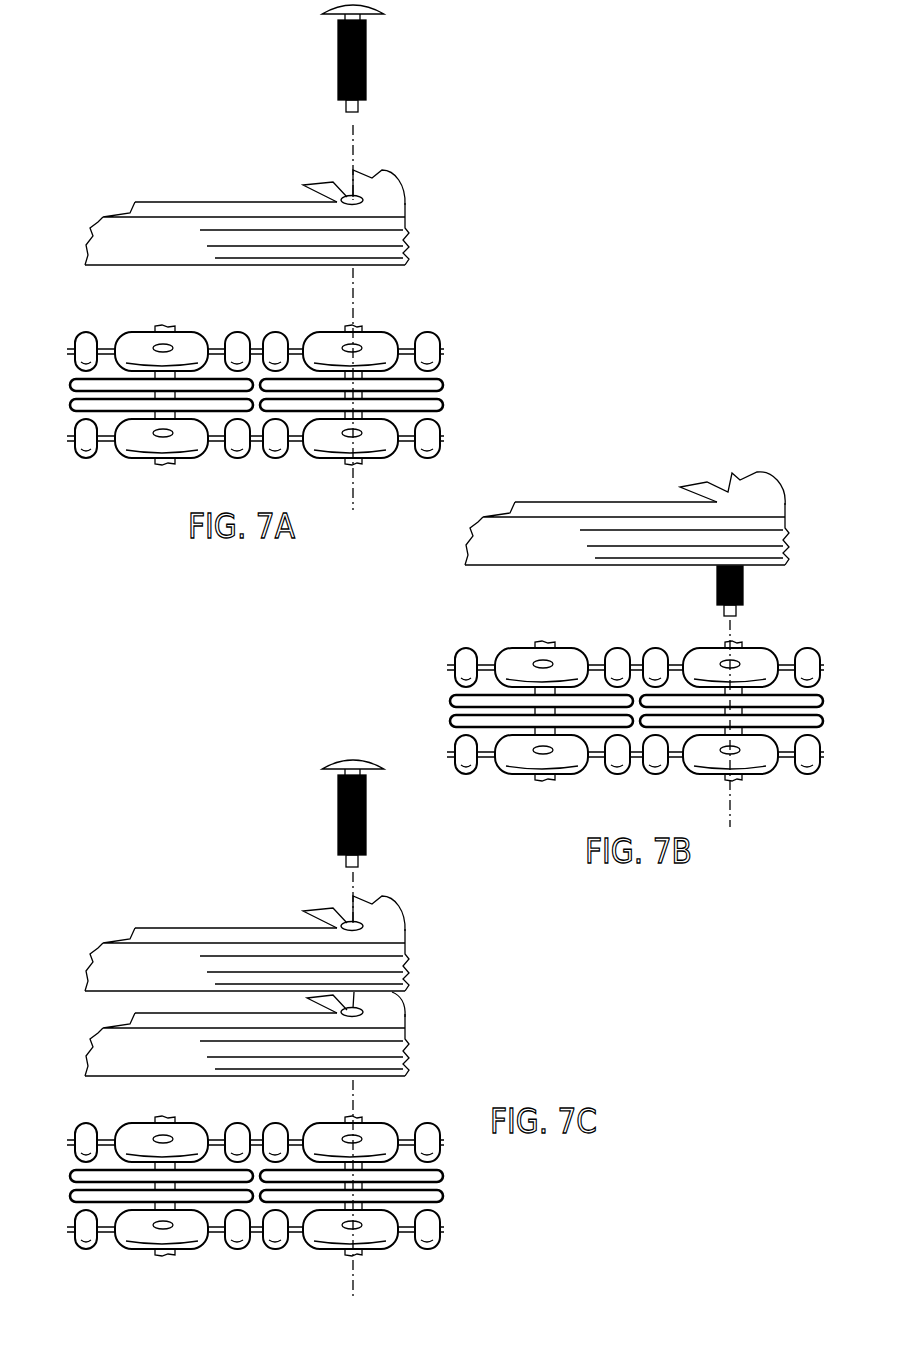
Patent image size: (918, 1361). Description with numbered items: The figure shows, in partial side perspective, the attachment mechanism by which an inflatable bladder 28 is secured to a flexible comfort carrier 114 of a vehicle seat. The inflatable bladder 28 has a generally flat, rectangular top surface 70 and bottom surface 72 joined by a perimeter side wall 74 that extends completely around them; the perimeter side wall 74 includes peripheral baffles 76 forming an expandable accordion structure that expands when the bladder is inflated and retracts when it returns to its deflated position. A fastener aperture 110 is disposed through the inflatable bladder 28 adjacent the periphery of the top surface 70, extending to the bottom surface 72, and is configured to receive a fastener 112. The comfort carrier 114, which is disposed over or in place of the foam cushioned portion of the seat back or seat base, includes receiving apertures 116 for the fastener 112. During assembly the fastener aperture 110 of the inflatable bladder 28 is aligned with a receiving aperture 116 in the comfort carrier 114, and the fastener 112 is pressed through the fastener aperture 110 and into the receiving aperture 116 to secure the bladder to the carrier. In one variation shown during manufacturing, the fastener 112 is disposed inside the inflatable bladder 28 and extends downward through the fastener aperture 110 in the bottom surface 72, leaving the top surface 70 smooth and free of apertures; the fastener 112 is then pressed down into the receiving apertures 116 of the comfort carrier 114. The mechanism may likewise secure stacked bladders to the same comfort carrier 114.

In FIG. 7A, the inflatable bladder 28 is at (217, 200).
In FIG. 7B, the inflatable bladder 28 is at (620, 502).
In FIG. 7C, the inflatable bladder 28 is at (245, 925).
In FIG. 7A, the top surface 70 is at (390, 197).
In FIG. 7B, the top surface 70 is at (768, 495).
In FIG. 7C, the top surface 70 is at (392, 920).
In FIG. 7A, the bottom surface 72 is at (393, 267).
In FIG. 7B, the bottom surface 72 is at (768, 567).
In FIG. 7C, the bottom surface 72 is at (390, 992).
In FIG. 7A, the perimeter side wall 74 is at (405, 230).
In FIG. 7B, the perimeter side wall 74 is at (785, 530).
In FIG. 7C, the perimeter side wall 74 is at (405, 953).
In FIG. 7A, the peripheral baffles 76 is at (407, 246).
In FIG. 7B, the peripheral baffles 76 is at (787, 558).
In FIG. 7C, the peripheral baffles 76 is at (407, 983).
In FIG. 7A, the fastener aperture 110 is at (360, 197).
In FIG. 7C, the fastener aperture 110 is at (360, 923).
In FIG. 7A, the fastener 112 is at (366, 53).
In FIG. 7B, the fastener 112 is at (745, 587).
In FIG. 7C, the fastener 112 is at (337, 818).
In FIG. 7A, the flexible comfort carrier 114 is at (438, 328).
In FIG. 7B, the flexible comfort carrier 114 is at (688, 718).
In FIG. 7C, the flexible comfort carrier 114 is at (295, 1175).
In FIG. 7A, the receiving apertures 116 is at (157, 343).
In FIG. 7B, the receiving apertures 116 is at (537, 662).
In FIG. 7C, the receiving apertures 116 is at (157, 1137).